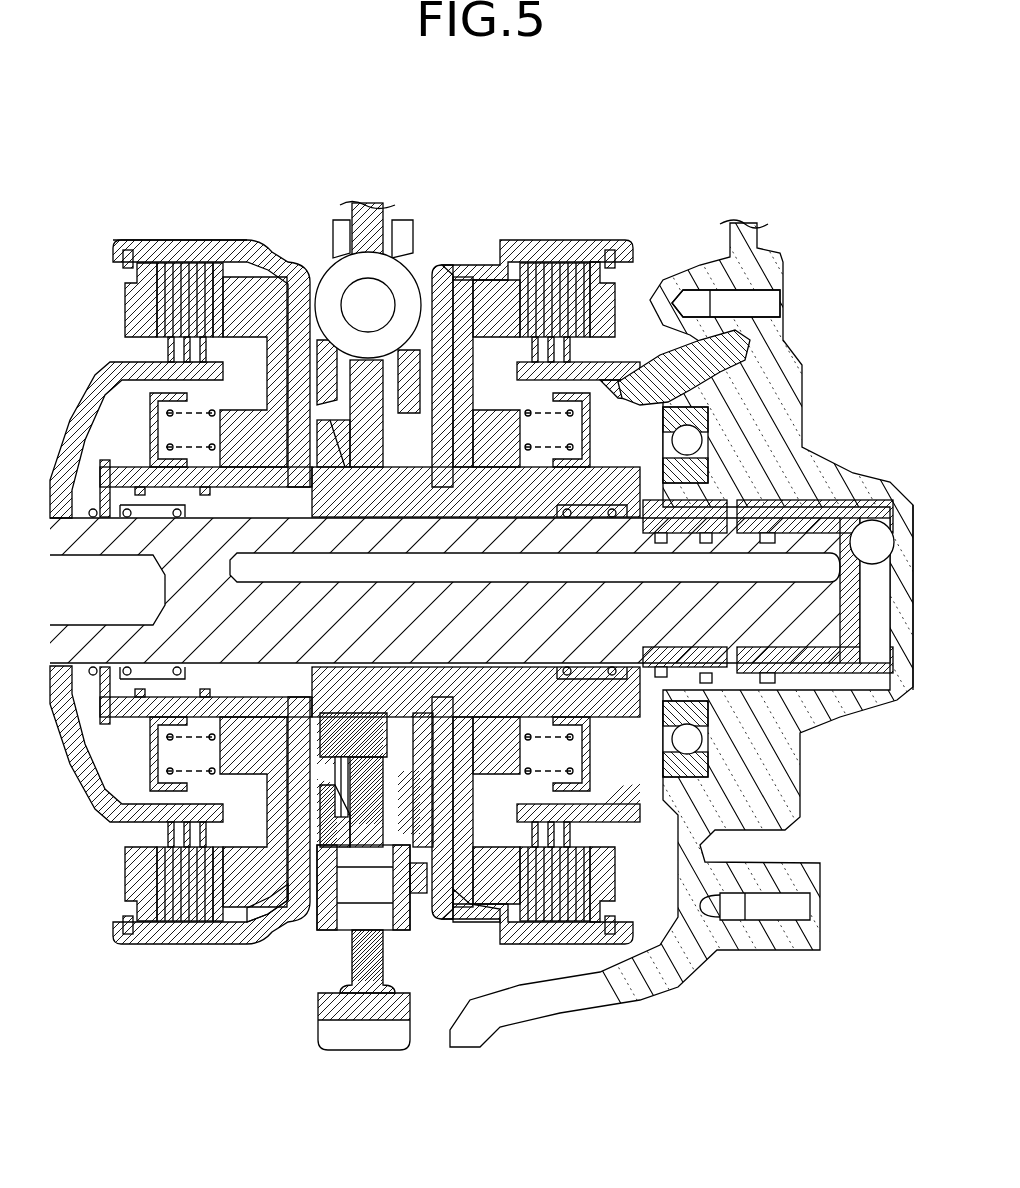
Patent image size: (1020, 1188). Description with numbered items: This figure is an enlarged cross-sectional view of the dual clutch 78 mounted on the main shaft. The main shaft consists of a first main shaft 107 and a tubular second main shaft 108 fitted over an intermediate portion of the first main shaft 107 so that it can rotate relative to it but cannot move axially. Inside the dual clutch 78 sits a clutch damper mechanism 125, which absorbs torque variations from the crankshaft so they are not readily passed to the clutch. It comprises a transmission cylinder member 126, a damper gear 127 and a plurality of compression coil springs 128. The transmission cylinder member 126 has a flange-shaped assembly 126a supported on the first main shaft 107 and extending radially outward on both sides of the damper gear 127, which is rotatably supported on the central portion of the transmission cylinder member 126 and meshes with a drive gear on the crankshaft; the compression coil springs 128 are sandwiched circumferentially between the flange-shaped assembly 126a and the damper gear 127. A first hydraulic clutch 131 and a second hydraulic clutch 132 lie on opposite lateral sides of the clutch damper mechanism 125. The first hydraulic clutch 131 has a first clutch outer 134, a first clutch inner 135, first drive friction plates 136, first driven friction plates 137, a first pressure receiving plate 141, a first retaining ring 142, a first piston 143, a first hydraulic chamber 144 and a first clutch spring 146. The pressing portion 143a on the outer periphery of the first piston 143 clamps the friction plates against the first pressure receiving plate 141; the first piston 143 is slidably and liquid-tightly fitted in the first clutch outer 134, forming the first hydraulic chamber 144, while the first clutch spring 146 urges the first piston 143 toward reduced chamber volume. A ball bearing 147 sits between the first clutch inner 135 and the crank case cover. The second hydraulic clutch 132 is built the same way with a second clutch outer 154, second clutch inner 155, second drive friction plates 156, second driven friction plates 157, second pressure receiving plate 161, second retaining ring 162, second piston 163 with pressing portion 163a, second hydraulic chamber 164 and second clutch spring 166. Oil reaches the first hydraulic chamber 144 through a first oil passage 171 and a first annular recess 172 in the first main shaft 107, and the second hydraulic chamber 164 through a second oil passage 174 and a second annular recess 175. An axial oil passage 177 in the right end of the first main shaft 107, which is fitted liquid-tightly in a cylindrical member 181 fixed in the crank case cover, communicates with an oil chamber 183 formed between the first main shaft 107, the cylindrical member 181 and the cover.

The dual clutch 78 is at (147, 182).
The first main shaft 107 is at (830, 712).
The second main shaft 108 is at (75, 470).
The clutch damper mechanism 125 is at (368, 200).
The transmission cylinder member 126 is at (305, 275).
The flange-shaped assembly 126a is at (403, 937).
The damper gear 127 is at (365, 1050).
The compression coil springs 128 is at (440, 265).
The first hydraulic clutch 131 is at (612, 250).
The second hydraulic clutch 132 is at (141, 236).
The first clutch outer 134 is at (537, 262).
The first clutch inner 135 is at (780, 300).
The first drive friction plates 136 is at (557, 943).
The first driven friction plates 137 is at (600, 262).
The first pressure receiving plate 141 is at (688, 240).
The first retaining ring 142 is at (660, 240).
The first piston 143 is at (460, 917).
The pressing portion 143a is at (467, 943).
The first hydraulic chamber 144 is at (478, 280).
The first clutch spring 146 is at (700, 370).
The ball bearing 147 is at (705, 420).
The second clutch outer 154 is at (203, 262).
The second clutch inner 155 is at (110, 362).
The second drive friction plates 156 is at (192, 948).
The second driven friction plates 157 is at (180, 262).
The second pressure receiving plate 161 is at (130, 300).
The second retaining ring 162 is at (124, 255).
The second piston 163 is at (250, 945).
The pressing portion 163a is at (263, 920).
The second hydraulic chamber 164 is at (247, 277).
The second clutch spring 166 is at (150, 396).
The first oil passage 171 is at (705, 778).
The first annular recess 172 is at (700, 745).
The second oil passage 174 is at (150, 802).
The second annular recess 175 is at (150, 718).
The axial oil passage 177 is at (872, 520).
The cylindrical member 181 is at (860, 678).
The oil chamber 183 is at (908, 490).